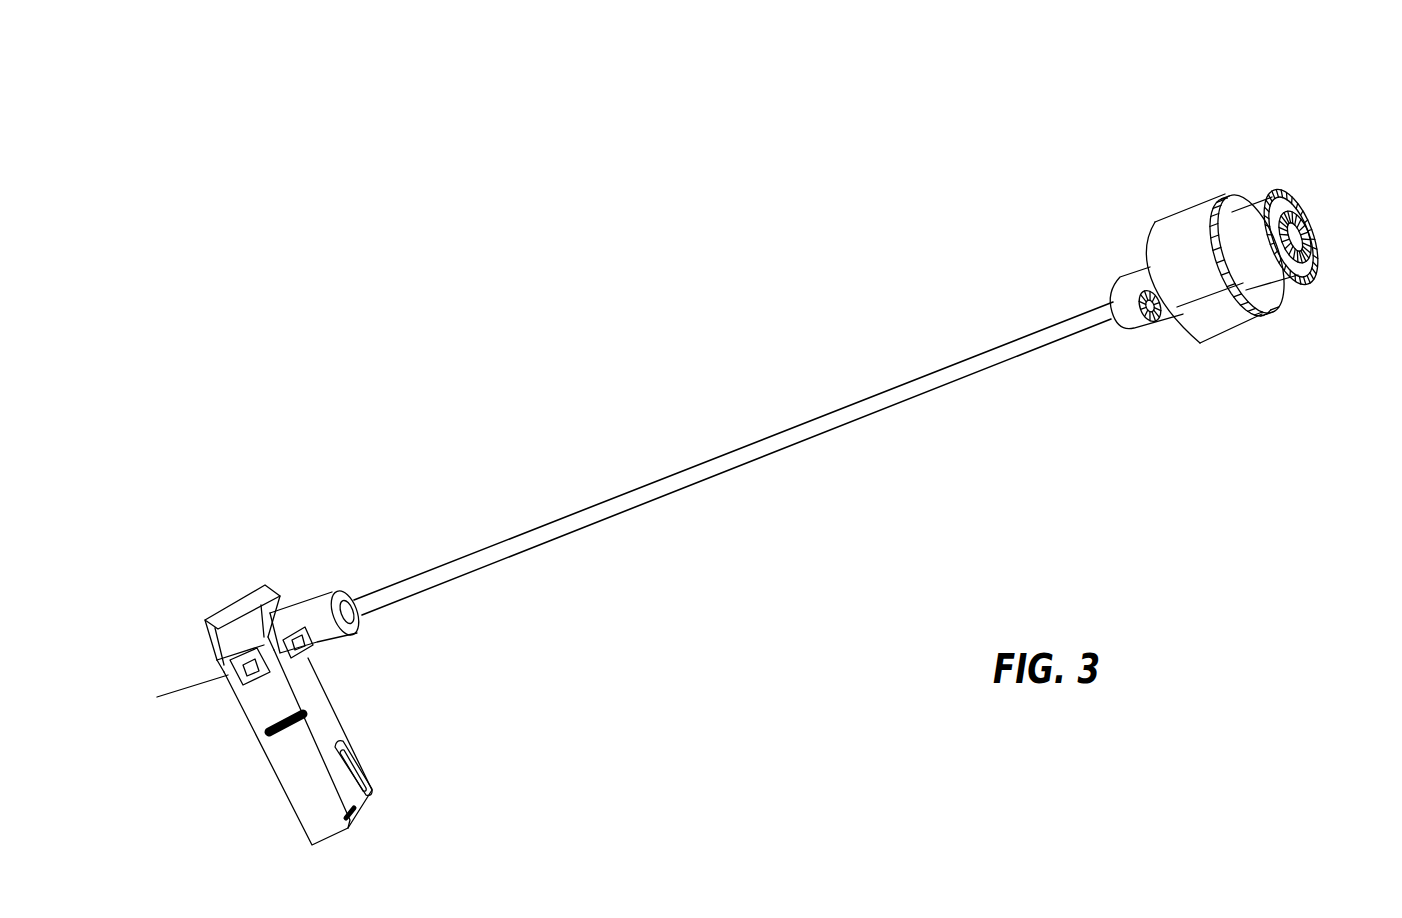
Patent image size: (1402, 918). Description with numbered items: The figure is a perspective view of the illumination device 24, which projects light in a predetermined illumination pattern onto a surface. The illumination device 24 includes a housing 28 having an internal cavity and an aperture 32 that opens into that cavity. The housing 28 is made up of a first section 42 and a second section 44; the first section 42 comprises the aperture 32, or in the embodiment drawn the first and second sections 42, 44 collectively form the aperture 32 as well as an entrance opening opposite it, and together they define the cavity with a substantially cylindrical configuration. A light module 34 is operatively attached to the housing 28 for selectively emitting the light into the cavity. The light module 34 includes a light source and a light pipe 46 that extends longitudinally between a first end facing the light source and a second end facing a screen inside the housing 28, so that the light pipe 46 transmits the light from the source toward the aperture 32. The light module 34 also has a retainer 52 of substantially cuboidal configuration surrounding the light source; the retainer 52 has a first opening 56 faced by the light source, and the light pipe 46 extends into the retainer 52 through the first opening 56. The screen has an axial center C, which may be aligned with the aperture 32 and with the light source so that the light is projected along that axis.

The illumination device 24 is at (984, 139).
The housing 28 is at (1222, 198).
The aperture 32 is at (1321, 251).
The light module 34 is at (376, 538).
The first section 42 is at (1178, 233).
The second section 44 is at (1213, 337).
The light pipe 46 is at (530, 522).
The retainer 52 is at (214, 603).
The first opening 56 is at (352, 636).
The axial center C is at (1320, 220).